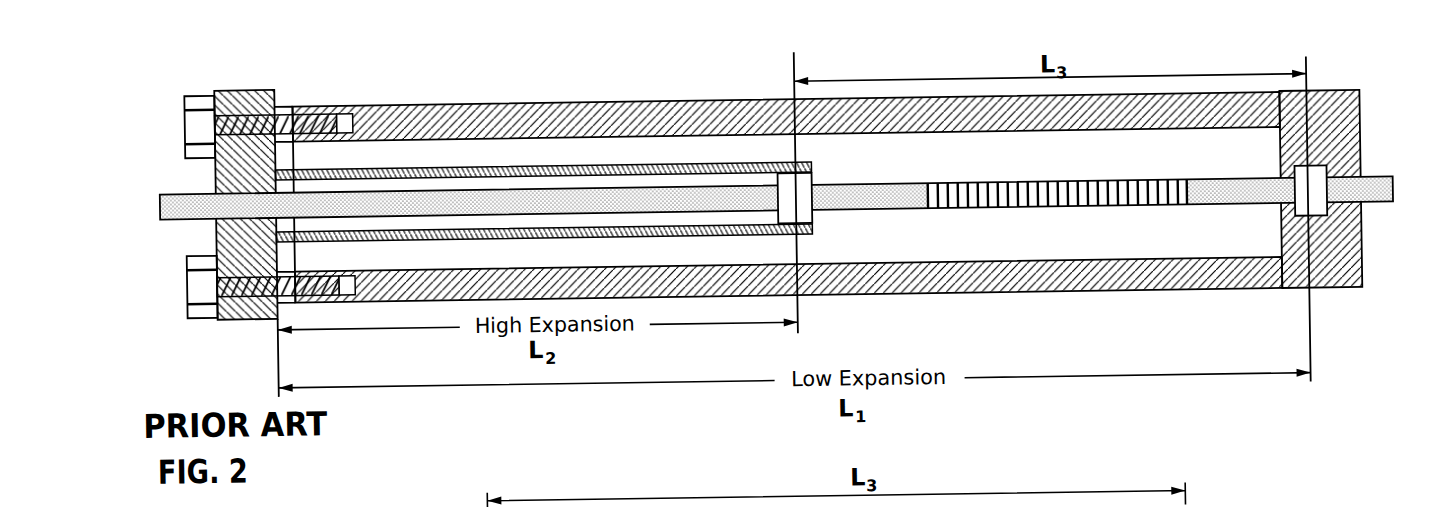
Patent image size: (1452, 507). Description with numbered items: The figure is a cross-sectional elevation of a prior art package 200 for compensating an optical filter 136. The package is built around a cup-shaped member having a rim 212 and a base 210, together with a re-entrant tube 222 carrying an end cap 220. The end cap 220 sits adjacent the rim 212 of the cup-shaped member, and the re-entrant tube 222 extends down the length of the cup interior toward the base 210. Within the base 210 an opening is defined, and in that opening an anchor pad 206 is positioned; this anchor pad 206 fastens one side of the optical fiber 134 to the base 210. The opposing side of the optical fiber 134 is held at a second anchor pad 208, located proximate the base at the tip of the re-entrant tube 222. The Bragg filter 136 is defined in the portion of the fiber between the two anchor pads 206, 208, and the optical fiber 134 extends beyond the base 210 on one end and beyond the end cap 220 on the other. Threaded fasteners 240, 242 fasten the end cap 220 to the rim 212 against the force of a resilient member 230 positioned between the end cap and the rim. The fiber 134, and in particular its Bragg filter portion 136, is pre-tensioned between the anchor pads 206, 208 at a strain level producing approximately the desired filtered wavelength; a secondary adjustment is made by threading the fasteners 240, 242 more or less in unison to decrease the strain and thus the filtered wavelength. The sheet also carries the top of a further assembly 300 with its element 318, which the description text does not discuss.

In FIG. 2, the prior art package 200 is at (803, 196).
In FIG. 2, the anchor pad 206 is at (1331, 172).
In FIG. 2, the anchor pad 208 is at (805, 204).
In FIG. 2, the base 210 is at (1342, 295).
In FIG. 2, the rim 212 is at (574, 126).
In FIG. 2, the end cap 220 is at (249, 94).
In FIG. 2, the re-entrant tube 222 is at (676, 177).
In FIG. 2, the resilient member 230 is at (285, 111).
In FIG. 2, the threaded fastener 240 is at (202, 98).
In FIG. 2, the threaded fastener 242 is at (186, 303).
In FIG. 2, the optical fiber 134 is at (1377, 213).
In FIG. 2, the Bragg filter 136 is at (1050, 214).
In FIG. 3, the athermal housing assembly 300 is at (1194, 491).
In FIG. 3, the end cap 318 is at (1232, 496).